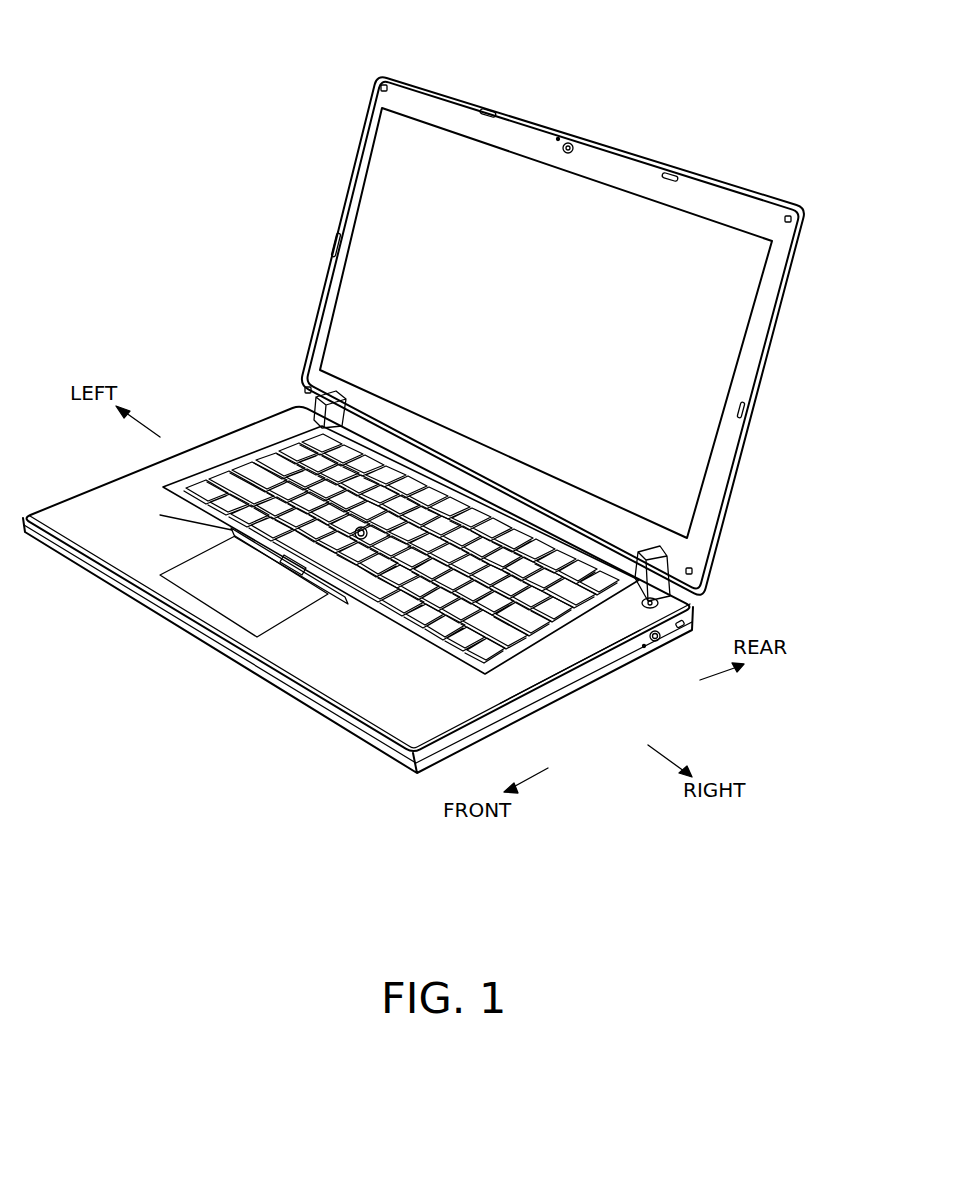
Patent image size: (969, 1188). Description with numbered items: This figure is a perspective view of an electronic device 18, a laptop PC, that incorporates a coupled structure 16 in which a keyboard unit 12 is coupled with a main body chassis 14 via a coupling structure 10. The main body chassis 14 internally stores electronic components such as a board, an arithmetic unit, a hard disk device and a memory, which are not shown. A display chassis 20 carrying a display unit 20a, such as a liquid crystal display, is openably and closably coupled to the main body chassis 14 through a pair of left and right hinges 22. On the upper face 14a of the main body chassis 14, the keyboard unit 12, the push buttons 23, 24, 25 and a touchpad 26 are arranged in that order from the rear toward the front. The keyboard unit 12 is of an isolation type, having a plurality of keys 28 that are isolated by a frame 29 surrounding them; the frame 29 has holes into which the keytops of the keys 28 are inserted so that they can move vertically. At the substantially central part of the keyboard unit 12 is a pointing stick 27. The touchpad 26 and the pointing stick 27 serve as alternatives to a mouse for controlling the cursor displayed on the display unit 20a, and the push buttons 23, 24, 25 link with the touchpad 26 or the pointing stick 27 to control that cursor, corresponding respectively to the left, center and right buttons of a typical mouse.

The coupling structure 10 is at (343, 598).
The keyboard unit 12 is at (249, 468).
The main body chassis 14 is at (196, 449).
The upper face 14a is at (372, 698).
The coupled structure 16 is at (234, 373).
The electronic device 18 is at (174, 141).
The display chassis 20 is at (776, 331).
The display unit 20a is at (708, 372).
The hinges 22 is at (316, 404).
The push button 23 is at (230, 538).
The push button 24 is at (303, 574).
The push button 25 is at (283, 572).
The touchpad 26 is at (213, 582).
The pointing stick 27 is at (366, 528).
The keys 28 is at (343, 510).
The frame 29 is at (552, 636).